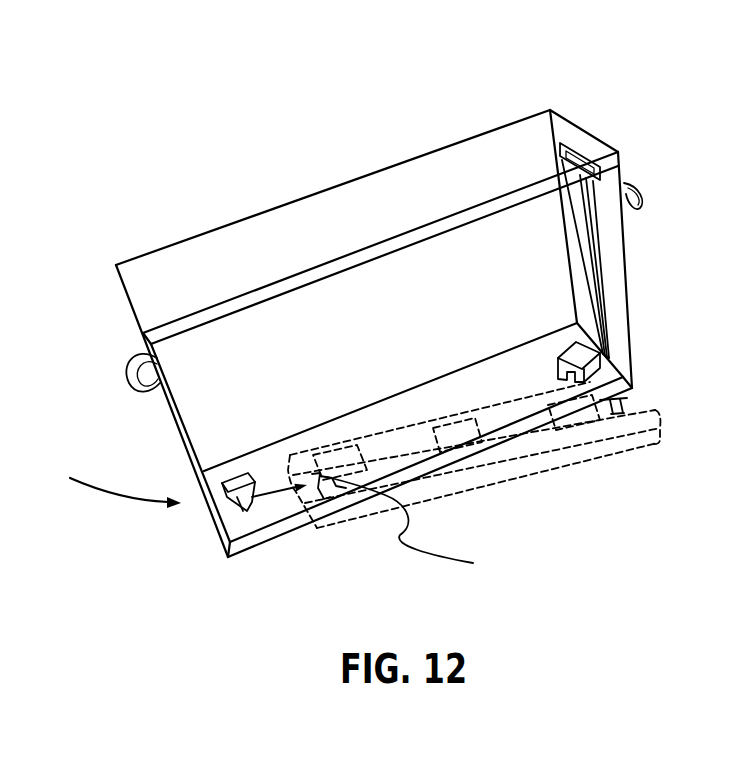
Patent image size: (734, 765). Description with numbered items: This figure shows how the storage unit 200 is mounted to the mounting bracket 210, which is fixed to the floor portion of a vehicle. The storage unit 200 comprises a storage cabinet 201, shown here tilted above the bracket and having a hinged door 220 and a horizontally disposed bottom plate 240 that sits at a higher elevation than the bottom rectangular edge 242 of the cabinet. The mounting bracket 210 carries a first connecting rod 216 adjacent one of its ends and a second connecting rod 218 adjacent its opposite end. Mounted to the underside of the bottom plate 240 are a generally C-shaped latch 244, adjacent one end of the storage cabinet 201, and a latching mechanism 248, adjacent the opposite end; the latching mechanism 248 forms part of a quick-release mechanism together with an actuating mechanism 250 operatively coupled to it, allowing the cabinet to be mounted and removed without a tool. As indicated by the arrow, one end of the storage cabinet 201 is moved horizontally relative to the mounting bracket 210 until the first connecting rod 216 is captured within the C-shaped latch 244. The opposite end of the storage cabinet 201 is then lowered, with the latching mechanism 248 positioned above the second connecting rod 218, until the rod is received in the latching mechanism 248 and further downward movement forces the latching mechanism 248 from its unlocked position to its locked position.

The storage unit 200 is at (276, 143).
The storage cabinet 201 is at (592, 123).
The hinged door 220 is at (395, 175).
The actuating mechanism 250 is at (612, 253).
The latching mechanism 248 is at (557, 346).
The bottom plate 240 is at (398, 402).
The bottom rectangular edge 242 is at (268, 542).
The C-shaped latch 244 is at (240, 482).
The second connecting rod 218 is at (616, 400).
The mounting bracket 210 is at (560, 479).
The first connecting rod 216 is at (414, 531).